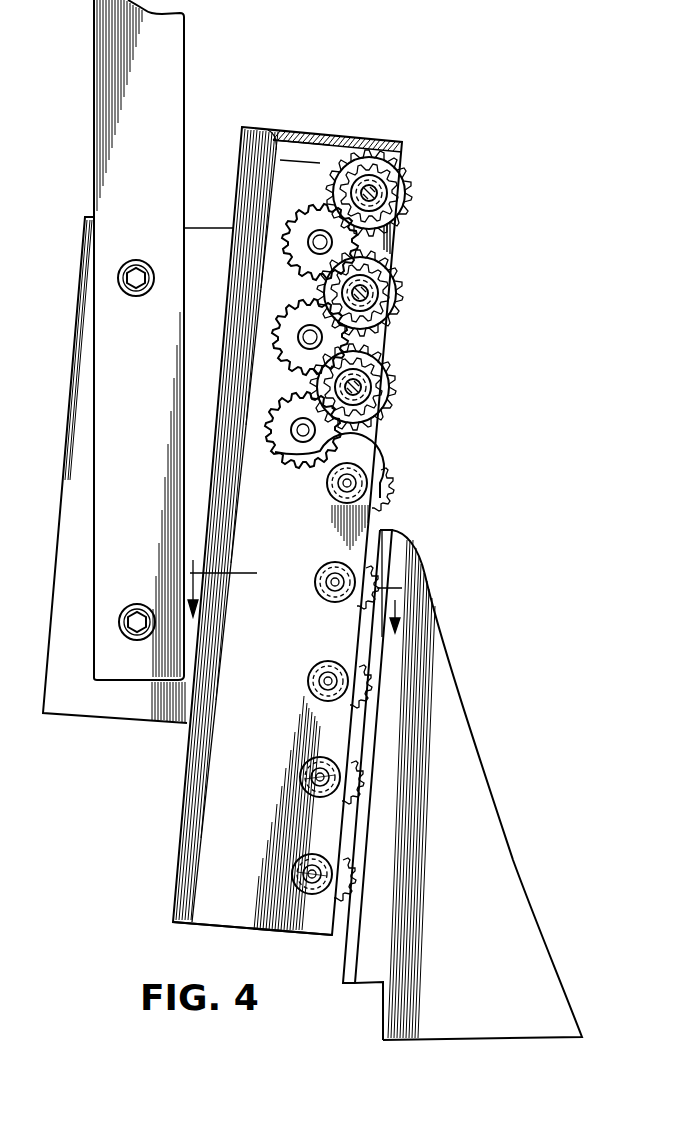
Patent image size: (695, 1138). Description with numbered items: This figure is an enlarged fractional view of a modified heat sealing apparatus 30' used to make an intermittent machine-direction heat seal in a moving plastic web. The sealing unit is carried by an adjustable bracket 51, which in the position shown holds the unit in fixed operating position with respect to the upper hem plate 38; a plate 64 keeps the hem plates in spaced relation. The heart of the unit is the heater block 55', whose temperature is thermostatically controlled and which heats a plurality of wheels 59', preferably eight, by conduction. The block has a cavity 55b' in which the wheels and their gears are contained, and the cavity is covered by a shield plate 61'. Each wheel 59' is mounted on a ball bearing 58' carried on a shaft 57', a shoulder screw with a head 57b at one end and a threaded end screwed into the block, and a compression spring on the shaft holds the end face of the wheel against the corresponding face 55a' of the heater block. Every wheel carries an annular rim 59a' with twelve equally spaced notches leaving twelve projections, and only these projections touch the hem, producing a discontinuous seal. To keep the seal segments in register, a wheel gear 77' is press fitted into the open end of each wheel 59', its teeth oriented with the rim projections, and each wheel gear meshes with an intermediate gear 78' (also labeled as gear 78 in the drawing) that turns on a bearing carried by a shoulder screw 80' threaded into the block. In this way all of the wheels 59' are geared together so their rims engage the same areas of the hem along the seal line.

The adjustable bracket 51 is at (108, 160).
The heater block 55' is at (287, 513).
The face of the heated block 55a' is at (348, 139).
The cavity 55b' is at (320, 123).
The shield plate 61' is at (227, 900).
The heated wheel 59' is at (363, 523).
The rim 59a' is at (392, 290).
The ball bearing 58' is at (383, 293).
The shaft 57' is at (386, 290).
The wheel gear 77' is at (397, 290).
The idler gear 78 is at (315, 289).
The intermediate gear 78' is at (294, 430).
The shoulder screw 80' is at (291, 460).
The roller shaft 57b is at (297, 868).
The heat sealing apparatus 30' is at (482, 401).
The upper hem plate 38 is at (340, 984).
The plate 64 is at (535, 975).